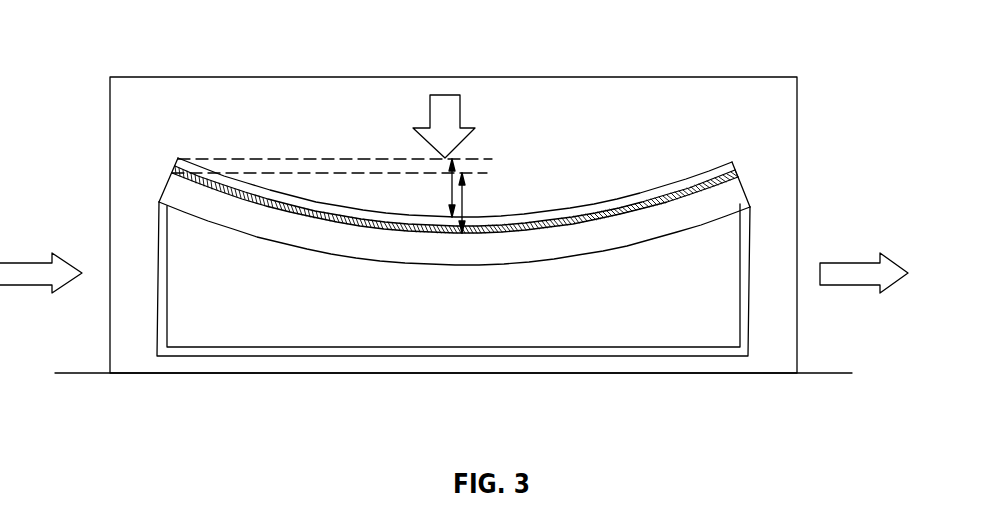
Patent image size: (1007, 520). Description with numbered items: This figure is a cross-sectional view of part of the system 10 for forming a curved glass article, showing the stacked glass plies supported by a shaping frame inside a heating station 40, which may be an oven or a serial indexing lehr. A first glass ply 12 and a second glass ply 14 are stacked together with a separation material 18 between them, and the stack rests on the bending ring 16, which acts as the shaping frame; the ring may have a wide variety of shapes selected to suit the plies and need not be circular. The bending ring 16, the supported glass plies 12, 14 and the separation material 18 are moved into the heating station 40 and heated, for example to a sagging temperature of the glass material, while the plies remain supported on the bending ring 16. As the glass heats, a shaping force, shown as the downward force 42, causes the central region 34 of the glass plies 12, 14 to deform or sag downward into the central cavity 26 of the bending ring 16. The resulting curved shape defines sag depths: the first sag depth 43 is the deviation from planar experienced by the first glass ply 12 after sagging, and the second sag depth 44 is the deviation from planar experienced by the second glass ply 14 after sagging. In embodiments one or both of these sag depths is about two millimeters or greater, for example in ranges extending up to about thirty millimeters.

The system 10 is at (838, 97).
The first glass ply 12 is at (735, 192).
The second glass ply 14 is at (684, 184).
The bending ring 16 is at (752, 292).
The separation material 18 is at (647, 203).
The central cavity 26 is at (529, 312).
The central region 34 is at (458, 282).
The heating station 40 is at (574, 77).
The downward force 42 is at (445, 116).
The first sag depth 43 is at (465, 195).
The second sag depth 44 is at (450, 195).